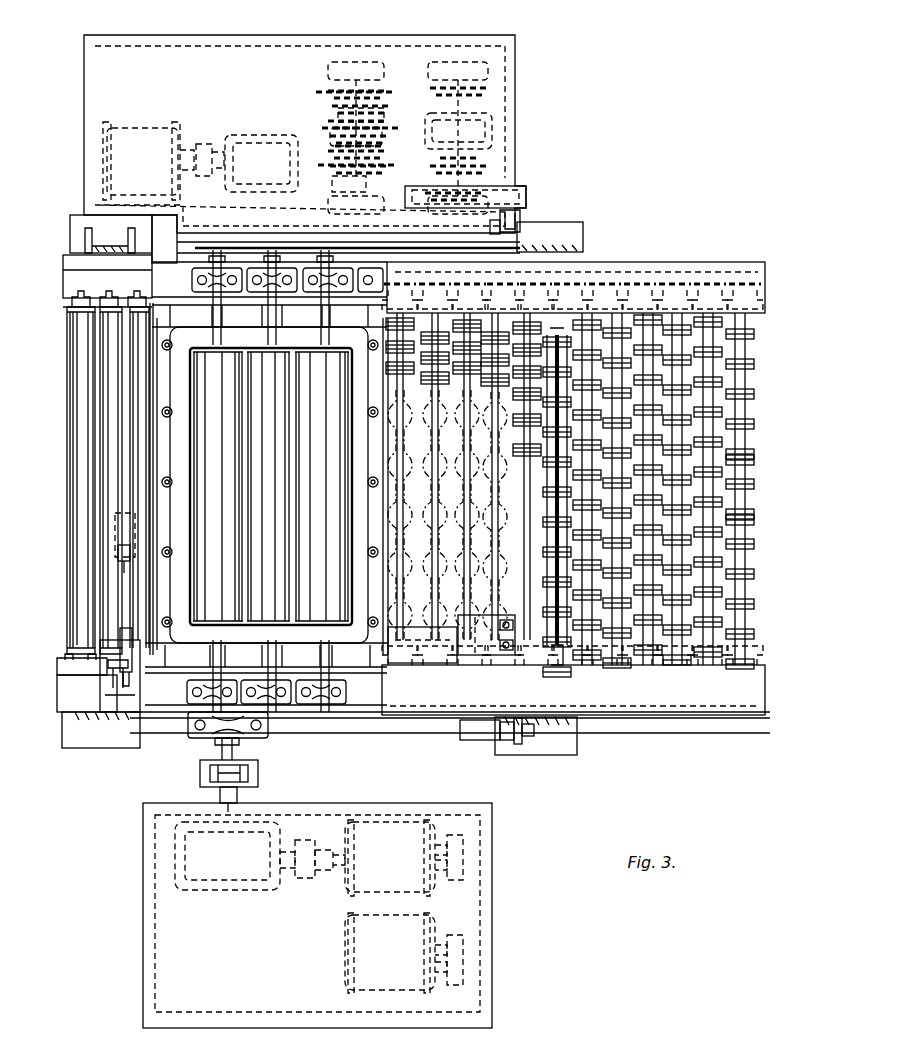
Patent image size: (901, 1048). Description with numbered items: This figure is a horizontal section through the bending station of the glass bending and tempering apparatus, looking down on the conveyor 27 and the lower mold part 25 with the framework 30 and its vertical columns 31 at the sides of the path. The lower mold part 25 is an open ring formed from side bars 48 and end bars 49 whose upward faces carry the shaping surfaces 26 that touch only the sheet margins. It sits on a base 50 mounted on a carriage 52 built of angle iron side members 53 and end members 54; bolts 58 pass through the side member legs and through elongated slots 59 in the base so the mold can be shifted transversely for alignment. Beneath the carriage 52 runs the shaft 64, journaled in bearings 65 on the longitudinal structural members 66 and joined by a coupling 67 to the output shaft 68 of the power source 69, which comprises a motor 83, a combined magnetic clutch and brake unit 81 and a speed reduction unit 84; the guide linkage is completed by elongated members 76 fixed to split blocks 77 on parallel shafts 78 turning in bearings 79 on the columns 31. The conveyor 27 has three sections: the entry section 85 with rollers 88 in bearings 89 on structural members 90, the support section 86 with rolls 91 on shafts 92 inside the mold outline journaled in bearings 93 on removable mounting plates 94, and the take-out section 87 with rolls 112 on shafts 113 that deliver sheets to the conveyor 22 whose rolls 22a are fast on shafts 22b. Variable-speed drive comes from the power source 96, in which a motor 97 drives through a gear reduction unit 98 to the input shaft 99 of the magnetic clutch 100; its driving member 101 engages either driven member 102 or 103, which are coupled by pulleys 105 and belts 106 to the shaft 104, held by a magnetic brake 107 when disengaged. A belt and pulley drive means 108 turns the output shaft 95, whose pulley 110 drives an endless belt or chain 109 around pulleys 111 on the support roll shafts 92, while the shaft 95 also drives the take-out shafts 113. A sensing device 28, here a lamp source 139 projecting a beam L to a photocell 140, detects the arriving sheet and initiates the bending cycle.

The conveyor 22 is at (762, 418).
The rolls 22a is at (748, 477).
The shafts 22b is at (748, 507).
The lower mold part 25 is at (168, 388).
The shaping surfaces 26 is at (182, 362).
The roller-type conveyor 27 is at (112, 495).
The sensing device 28 is at (118, 648).
The supporting framework 30 is at (70, 232).
The vertical columns 31 is at (68, 246).
The side bars 48 is at (183, 447).
The end bars 49 is at (285, 340).
The base 50 is at (378, 326).
The carriage 52 is at (370, 658).
The angle iron side members 53 is at (172, 322).
The end members 54 is at (225, 665).
The bolts 58 is at (162, 413).
The elongated slots 59 is at (150, 420).
The shaft 64 is at (224, 747).
The bearings 65 is at (268, 733).
The structural members 66 is at (363, 720).
The coupling 67 is at (204, 782).
The output shaft 68 is at (238, 801).
The power source 69 is at (326, 833).
The elongated members 76 is at (410, 633).
The split blocks 77 is at (472, 637).
The parallel shafts 78 is at (483, 655).
The bearings 79 is at (478, 732).
The combined magnetic clutch and brake unit 81 is at (347, 875).
The motor 83 is at (347, 932).
The speed reduction unit 84 is at (236, 882).
The entry section 85 is at (87, 520).
The support section 86 is at (215, 574).
The take-out section 87 is at (438, 332).
The rollers 88 is at (108, 527).
The bearings 89 is at (64, 297).
The structural members 90 is at (62, 272).
The rolls 91 is at (278, 395).
The shafts 92 is at (268, 319).
The bearings 93 is at (194, 281).
The mounting plates 94 is at (196, 270).
The output shaft 95 is at (521, 214).
The power source 96 is at (259, 76).
The motor 97 is at (140, 130).
The gear reduction unit 98 is at (240, 135).
The input shaft 99 is at (338, 186).
The magnetic clutch 100 is at (347, 114).
The driving member 101 is at (330, 128).
The driven member 102 is at (384, 118).
The driven member 103 is at (383, 147).
The shaft 104 is at (482, 160).
The pulleys 105 is at (332, 92).
The belts 106 is at (497, 92).
The magnetic brake 107 is at (500, 127).
The belt and pulley drive means 108 is at (528, 188).
The endless belt or chain 109 is at (281, 250).
The pulley 110 is at (512, 232).
The pulleys 111 is at (222, 248).
The rolls 112 is at (403, 322).
The shafts 113 is at (497, 330).
The lamp source 139 is at (108, 680).
The photocell 140 is at (120, 548).
The beam L is at (122, 588).